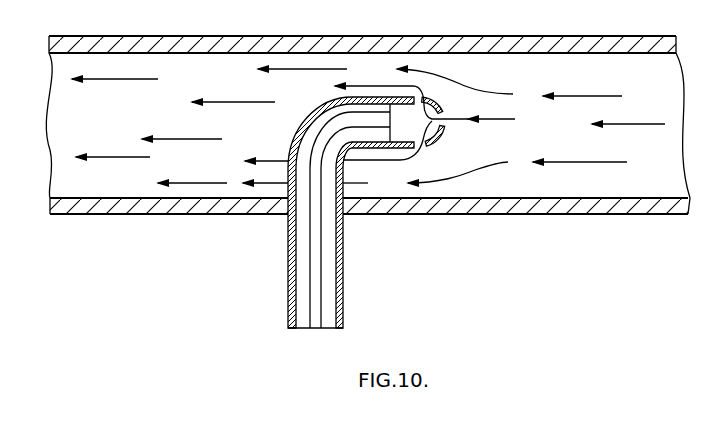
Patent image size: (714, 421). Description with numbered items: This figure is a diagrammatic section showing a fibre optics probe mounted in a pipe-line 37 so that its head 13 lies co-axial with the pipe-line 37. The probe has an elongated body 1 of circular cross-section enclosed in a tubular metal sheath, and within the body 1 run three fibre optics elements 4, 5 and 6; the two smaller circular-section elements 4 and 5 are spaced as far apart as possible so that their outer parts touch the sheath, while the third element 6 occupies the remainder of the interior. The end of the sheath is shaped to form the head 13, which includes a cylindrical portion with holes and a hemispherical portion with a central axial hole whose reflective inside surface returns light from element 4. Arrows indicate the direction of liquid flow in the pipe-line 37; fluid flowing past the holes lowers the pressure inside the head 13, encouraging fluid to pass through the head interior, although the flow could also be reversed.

The body 1 is at (345, 304).
The fibre optics element 4 is at (328, 273).
The fibre optics element 5 is at (305, 267).
The fibre optics element 6 is at (319, 227).
The head 13 is at (449, 138).
The pipe-line 37 is at (543, 205).